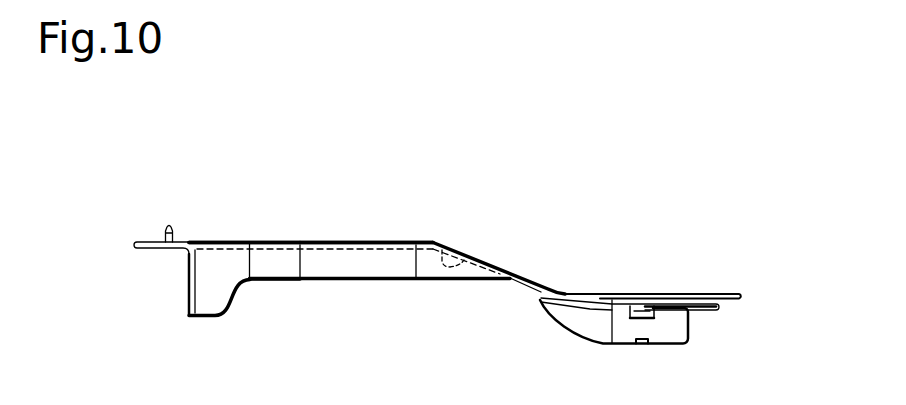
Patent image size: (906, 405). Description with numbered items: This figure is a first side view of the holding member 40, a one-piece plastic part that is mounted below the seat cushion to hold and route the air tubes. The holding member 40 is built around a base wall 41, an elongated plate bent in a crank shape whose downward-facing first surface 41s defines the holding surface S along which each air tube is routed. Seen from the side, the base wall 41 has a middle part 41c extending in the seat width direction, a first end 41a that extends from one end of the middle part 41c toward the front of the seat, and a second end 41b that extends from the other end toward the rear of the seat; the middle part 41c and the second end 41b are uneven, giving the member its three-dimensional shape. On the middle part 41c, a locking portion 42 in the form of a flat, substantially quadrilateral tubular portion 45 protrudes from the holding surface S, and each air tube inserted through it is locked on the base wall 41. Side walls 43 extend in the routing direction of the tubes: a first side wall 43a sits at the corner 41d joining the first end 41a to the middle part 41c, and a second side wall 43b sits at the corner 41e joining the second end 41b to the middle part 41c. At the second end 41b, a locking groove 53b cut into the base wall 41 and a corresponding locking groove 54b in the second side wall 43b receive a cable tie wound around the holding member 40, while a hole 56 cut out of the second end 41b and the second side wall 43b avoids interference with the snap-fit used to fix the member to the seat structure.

The holding member 40 is at (136, 134).
The base wall 41 is at (422, 292).
The first end 41a is at (152, 248).
The second end 41b is at (676, 293).
The middle part 41c is at (350, 247).
The corner 41d is at (232, 247).
The corner 41e is at (564, 291).
The first surface 41s is at (442, 250).
The holding surface S is at (472, 228).
The locking portion 42 is at (304, 296).
The tubular portion 45 is at (302, 265).
The side walls 43 is at (434, 313).
The first side wall 43a is at (205, 317).
The second side wall 43b is at (566, 334).
The locking groove 53b is at (713, 296).
The locking groove 54b is at (643, 345).
The hole 56 is at (636, 305).